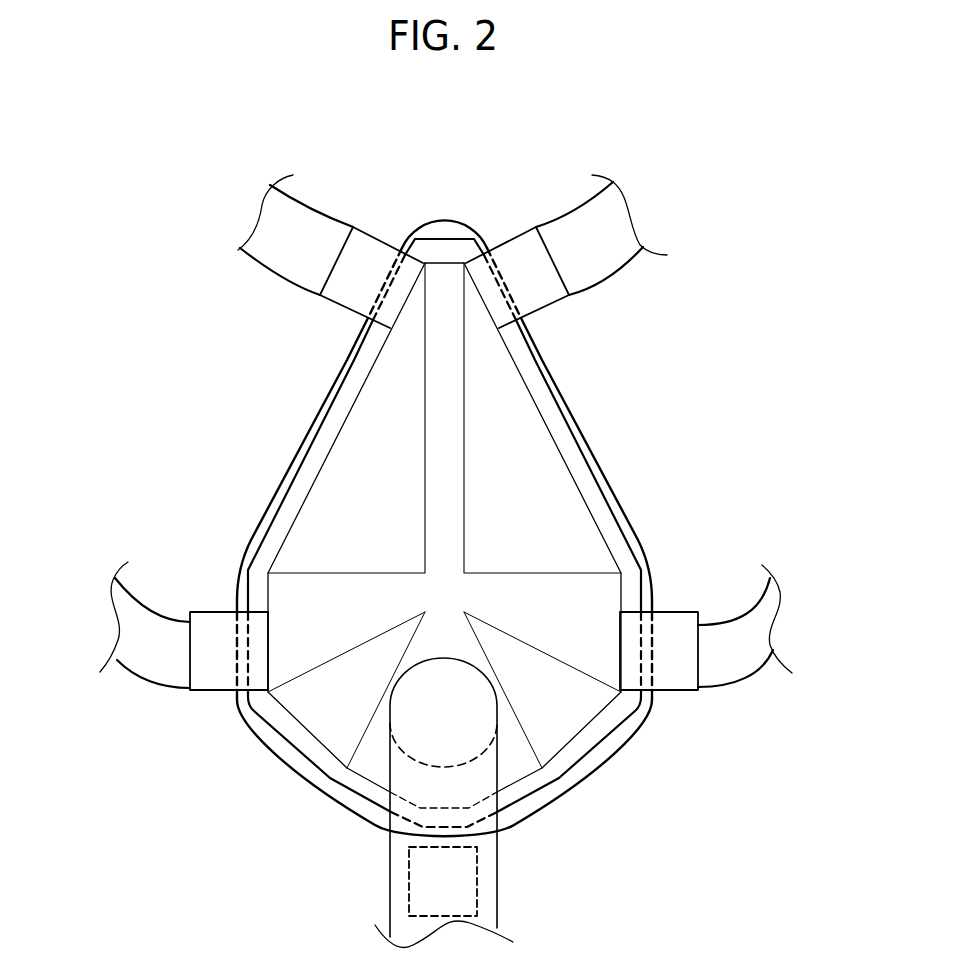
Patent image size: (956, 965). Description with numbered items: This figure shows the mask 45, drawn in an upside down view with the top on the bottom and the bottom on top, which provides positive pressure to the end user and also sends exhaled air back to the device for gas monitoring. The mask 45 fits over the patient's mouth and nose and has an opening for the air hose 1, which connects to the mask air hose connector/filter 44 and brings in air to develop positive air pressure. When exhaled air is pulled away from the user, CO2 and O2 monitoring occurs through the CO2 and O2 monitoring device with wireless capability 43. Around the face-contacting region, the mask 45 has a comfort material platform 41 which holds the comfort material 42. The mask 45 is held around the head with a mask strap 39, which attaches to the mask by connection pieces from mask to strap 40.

The air hose 1 is at (445, 800).
The mask strap 39 is at (253, 248).
The connection pieces from mask to strap 40 is at (353, 292).
The comfort material platform 41 is at (570, 460).
The comfort material 42 is at (607, 488).
The CO2 and O2 monitoring device with wireless capability 43 is at (447, 877).
The mask air hose connector/filter 44 is at (440, 703).
The mask 45 is at (443, 427).